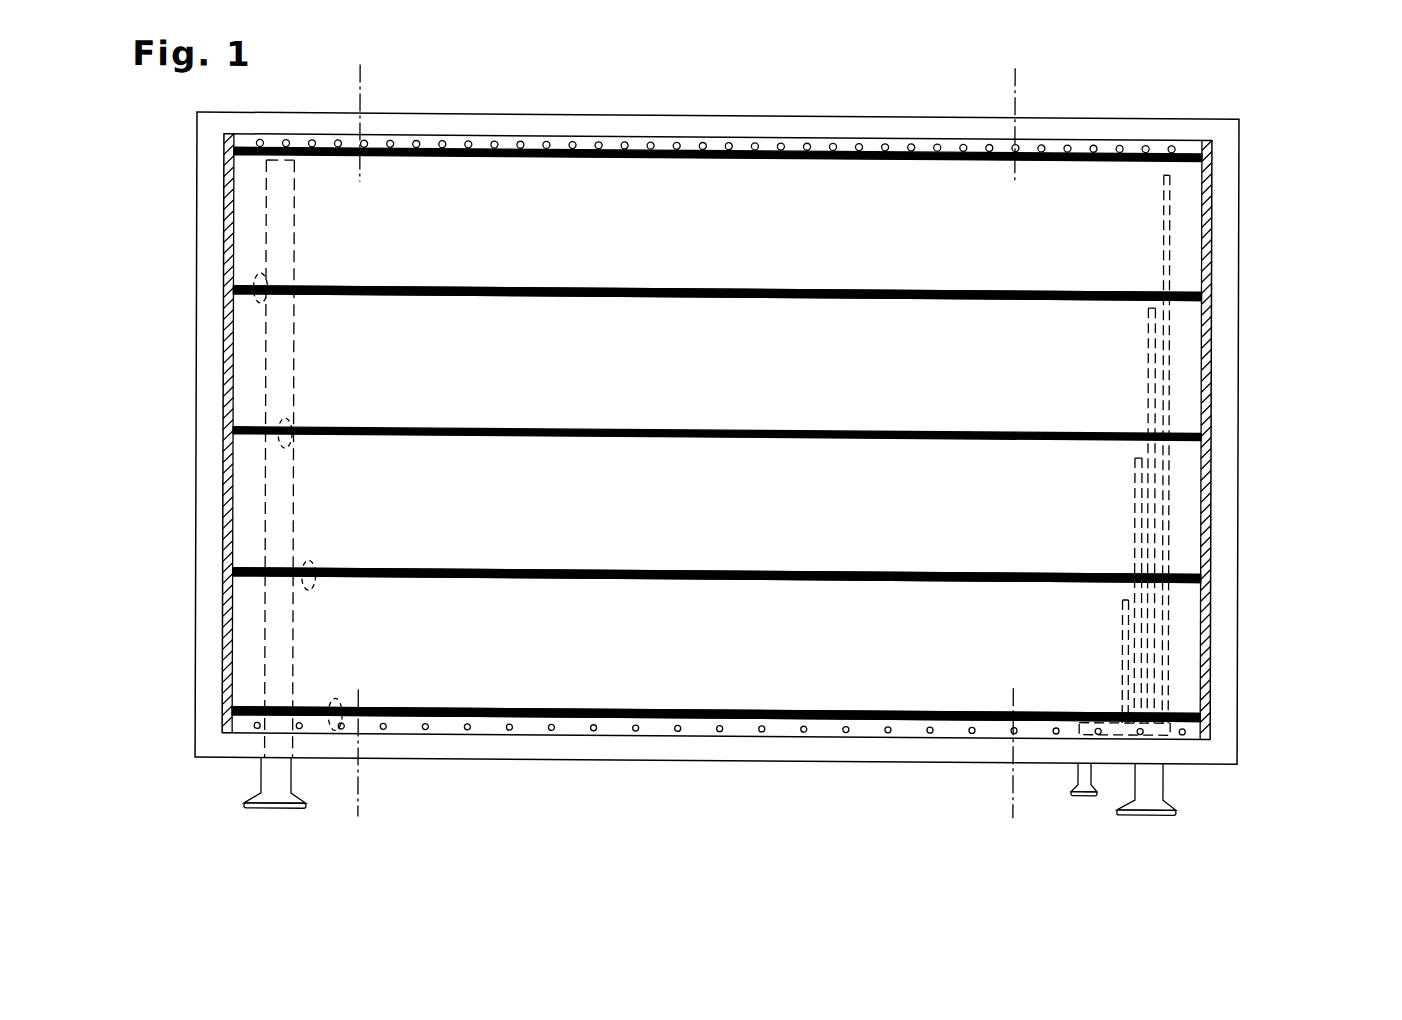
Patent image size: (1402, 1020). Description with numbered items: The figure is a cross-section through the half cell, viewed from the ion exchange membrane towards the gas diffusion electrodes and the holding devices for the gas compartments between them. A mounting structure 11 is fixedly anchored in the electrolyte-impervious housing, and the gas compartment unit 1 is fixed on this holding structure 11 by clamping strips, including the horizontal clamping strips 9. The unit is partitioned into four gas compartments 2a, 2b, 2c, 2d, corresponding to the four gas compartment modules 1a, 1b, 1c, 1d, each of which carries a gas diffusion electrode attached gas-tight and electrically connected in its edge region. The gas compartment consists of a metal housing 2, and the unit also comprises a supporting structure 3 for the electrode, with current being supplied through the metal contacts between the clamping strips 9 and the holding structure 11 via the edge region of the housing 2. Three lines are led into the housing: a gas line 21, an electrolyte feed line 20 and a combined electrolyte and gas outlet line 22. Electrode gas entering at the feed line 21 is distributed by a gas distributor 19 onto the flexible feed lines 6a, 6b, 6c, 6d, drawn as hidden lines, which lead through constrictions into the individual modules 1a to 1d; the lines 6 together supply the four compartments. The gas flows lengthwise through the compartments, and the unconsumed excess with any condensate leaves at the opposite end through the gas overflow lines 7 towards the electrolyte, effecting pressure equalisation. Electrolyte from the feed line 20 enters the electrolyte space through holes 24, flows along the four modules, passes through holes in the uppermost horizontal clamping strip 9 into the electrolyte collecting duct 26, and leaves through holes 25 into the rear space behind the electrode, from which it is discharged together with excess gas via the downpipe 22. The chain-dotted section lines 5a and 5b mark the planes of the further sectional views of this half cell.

The gas compartment unit 1 is at (395, 500).
The gas compartment module 1a is at (1215, 217).
The gas compartment module 1b is at (1215, 366).
The gas compartment module 1c is at (1215, 508).
The gas compartment module 1d is at (1215, 678).
The metal housing 2 is at (313, 258).
The gas compartment 2a is at (1097, 187).
The gas compartment 2b is at (1093, 328).
The gas compartment 2c is at (1097, 449).
The gas compartment 2d is at (1087, 600).
The supporting structure 3 is at (731, 267).
The section line 5a is at (1000, 444).
The section line 5b is at (361, 440).
The lead conductor 6 is at (1093, 445).
The flexible line 6a is at (1167, 204).
The flexible line 6b is at (1152, 345).
The flexible line 6c is at (1137, 477).
The flexible line 6d is at (1125, 636).
The gas overflow lines 7 is at (310, 713).
The horizontal clamping strips 9 is at (497, 147).
The mounting structure 11 is at (226, 235).
The gas distributor 19 is at (1153, 725).
The electrolyte feed line 20 is at (1155, 813).
The gas line 21 is at (1087, 795).
The combined electrolyte and gas outlet line 22 is at (278, 811).
The holes 24 is at (551, 732).
The holes 25 is at (830, 146).
The electrolyte collecting duct 26 is at (691, 143).